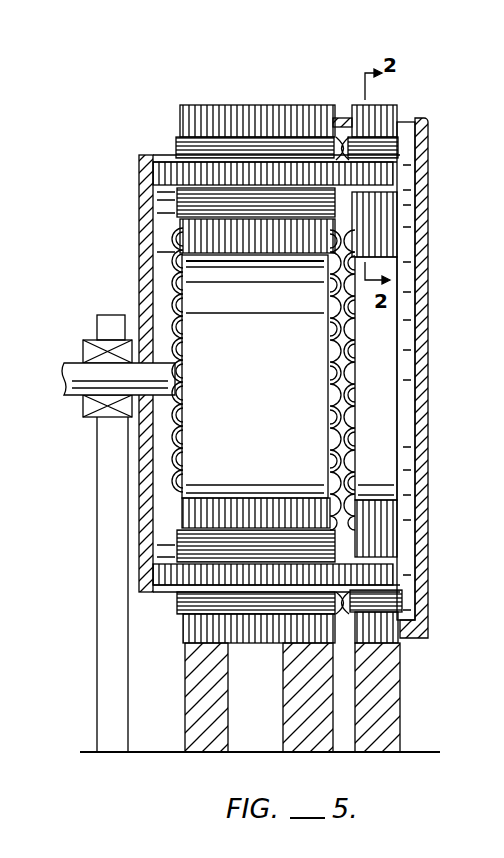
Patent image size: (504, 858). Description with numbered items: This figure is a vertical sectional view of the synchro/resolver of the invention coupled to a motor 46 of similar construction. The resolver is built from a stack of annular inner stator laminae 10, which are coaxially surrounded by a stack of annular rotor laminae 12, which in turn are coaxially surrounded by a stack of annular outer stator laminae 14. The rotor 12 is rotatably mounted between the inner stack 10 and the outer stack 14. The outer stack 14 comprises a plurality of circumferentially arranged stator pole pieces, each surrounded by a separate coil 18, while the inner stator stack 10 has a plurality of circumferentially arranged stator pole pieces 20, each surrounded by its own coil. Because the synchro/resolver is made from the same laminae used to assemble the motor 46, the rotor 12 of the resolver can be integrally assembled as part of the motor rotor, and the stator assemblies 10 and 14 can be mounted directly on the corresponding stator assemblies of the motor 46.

The inner stator laminae 10 is at (400, 226).
The rotor laminae 12 is at (393, 205).
The outer stator laminae 14 is at (386, 101).
The coil 18 is at (393, 168).
The stator pole pieces 20 is at (403, 205).
The motor 46 is at (296, 103).